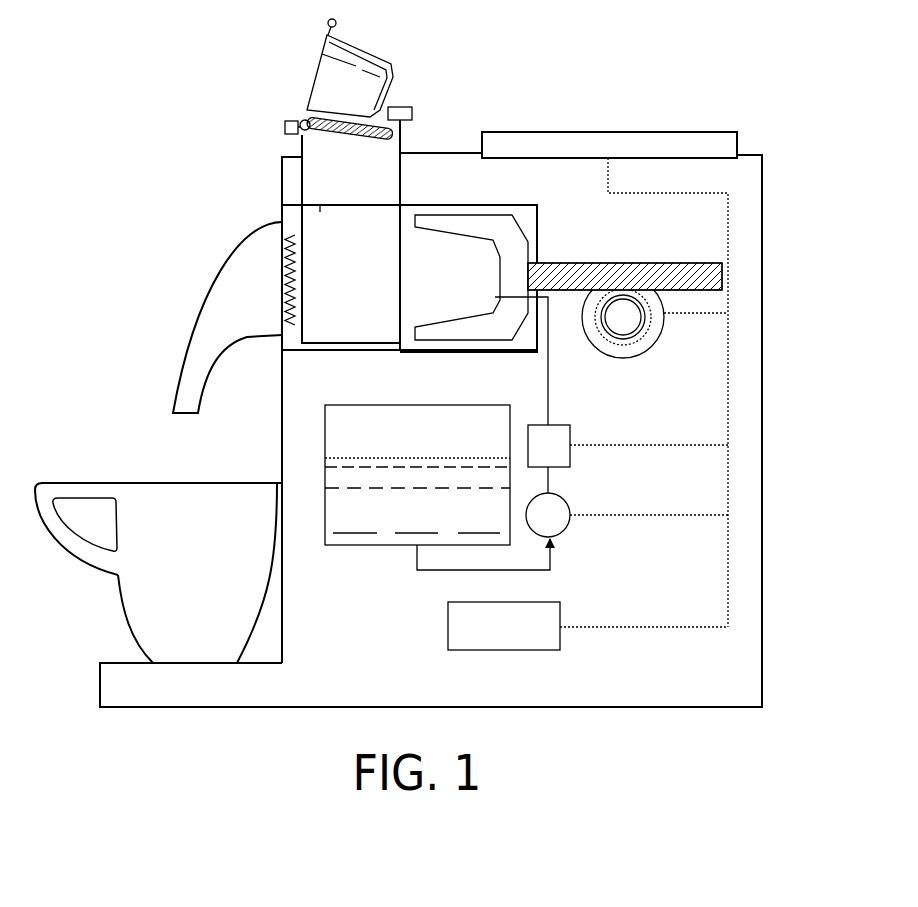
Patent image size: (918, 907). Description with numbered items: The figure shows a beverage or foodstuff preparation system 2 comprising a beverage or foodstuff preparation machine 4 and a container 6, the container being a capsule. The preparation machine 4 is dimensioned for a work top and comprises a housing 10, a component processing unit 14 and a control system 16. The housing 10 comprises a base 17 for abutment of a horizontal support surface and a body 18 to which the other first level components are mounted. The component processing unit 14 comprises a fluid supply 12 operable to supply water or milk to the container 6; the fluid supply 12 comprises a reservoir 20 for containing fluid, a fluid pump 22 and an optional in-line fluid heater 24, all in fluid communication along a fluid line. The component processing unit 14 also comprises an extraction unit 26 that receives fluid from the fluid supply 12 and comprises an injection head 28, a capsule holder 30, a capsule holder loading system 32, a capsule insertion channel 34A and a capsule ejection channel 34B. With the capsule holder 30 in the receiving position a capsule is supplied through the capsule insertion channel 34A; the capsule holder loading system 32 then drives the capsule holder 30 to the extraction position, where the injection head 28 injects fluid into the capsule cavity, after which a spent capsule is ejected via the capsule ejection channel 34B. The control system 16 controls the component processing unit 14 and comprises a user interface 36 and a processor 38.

The beverage or foodstuff preparation system 2 is at (753, 56).
The beverage or foodstuff preparation machine 4 is at (601, 102).
The container 6 is at (336, 100).
The housing 10 is at (766, 210).
The fluid supply 12 is at (572, 433).
The component processing unit 14 is at (159, 312).
The control system 16 is at (587, 654).
The base 17 is at (200, 708).
The body 18 is at (134, 25).
The reservoir 20 is at (404, 444).
The fluid pump 22 is at (627, 515).
The fluid heater 24 is at (538, 456).
The extraction unit 26 is at (133, 208).
The injection head 28 is at (403, 358).
The capsule holder 30 is at (302, 358).
The capsule holder loading system 32 is at (542, 257).
The capsule insertion channel 34A is at (311, 201).
The capsule ejection channel 34B is at (315, 343).
The user interface 36 is at (710, 132).
The processor 38 is at (727, 657).